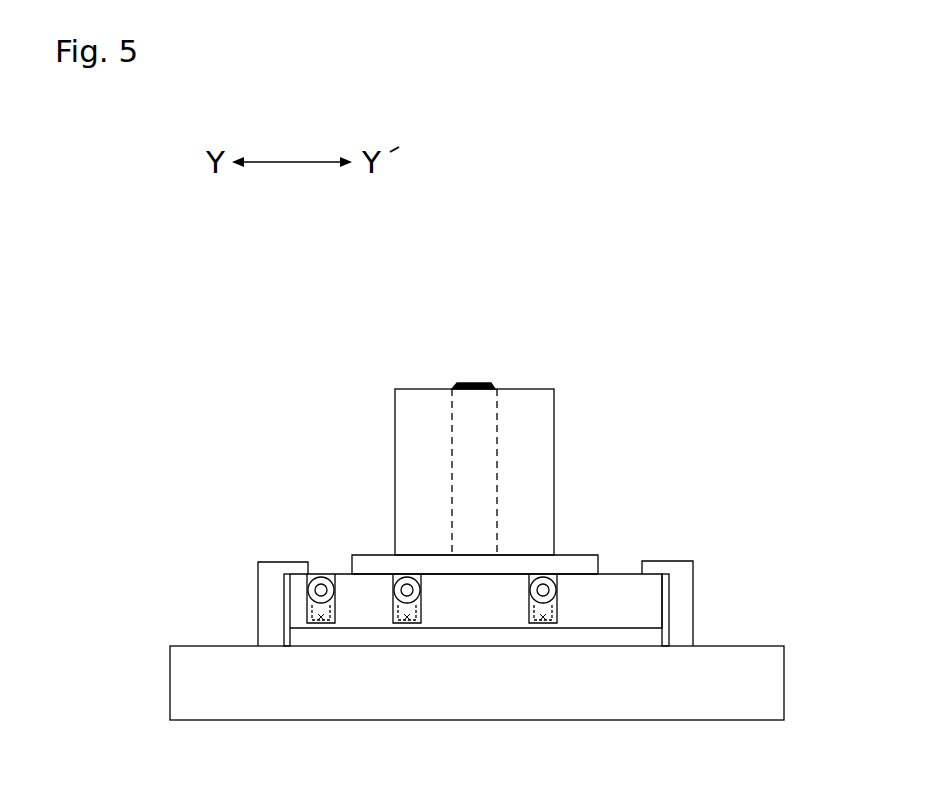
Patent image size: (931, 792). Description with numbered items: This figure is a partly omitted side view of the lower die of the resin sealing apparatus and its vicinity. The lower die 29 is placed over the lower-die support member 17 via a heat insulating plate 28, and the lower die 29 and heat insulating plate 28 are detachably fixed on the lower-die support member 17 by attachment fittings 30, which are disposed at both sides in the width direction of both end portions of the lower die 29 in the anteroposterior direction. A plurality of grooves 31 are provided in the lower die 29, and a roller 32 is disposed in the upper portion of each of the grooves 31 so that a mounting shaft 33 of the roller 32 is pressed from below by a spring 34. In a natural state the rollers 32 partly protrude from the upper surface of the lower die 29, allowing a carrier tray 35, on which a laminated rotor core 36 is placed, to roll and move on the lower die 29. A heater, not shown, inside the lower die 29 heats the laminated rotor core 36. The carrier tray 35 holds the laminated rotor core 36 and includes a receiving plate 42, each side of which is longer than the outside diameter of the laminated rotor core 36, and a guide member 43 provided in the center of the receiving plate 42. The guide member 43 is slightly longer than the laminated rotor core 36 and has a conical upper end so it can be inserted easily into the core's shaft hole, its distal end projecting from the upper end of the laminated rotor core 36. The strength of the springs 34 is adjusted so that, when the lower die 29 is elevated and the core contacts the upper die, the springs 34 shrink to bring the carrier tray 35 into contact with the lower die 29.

The lower-die support member 17 is at (742, 698).
The heat insulating plate 28 is at (635, 636).
The lower die 29 is at (650, 602).
The attachment fittings 30 is at (268, 590).
The grooves 31 is at (401, 573).
The roller 32 is at (310, 593).
The mounting shaft 33 is at (320, 603).
The spring 34 is at (387, 628).
The carrier tray 35 is at (525, 556).
The laminated rotor core 36 is at (534, 415).
The receiving plate 42 is at (432, 567).
The guide member 43 is at (474, 384).